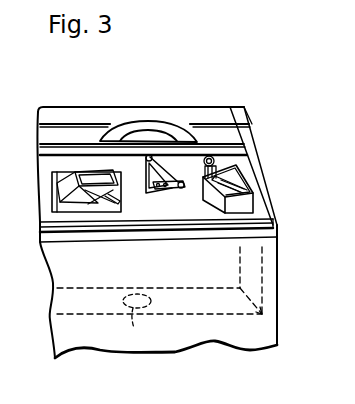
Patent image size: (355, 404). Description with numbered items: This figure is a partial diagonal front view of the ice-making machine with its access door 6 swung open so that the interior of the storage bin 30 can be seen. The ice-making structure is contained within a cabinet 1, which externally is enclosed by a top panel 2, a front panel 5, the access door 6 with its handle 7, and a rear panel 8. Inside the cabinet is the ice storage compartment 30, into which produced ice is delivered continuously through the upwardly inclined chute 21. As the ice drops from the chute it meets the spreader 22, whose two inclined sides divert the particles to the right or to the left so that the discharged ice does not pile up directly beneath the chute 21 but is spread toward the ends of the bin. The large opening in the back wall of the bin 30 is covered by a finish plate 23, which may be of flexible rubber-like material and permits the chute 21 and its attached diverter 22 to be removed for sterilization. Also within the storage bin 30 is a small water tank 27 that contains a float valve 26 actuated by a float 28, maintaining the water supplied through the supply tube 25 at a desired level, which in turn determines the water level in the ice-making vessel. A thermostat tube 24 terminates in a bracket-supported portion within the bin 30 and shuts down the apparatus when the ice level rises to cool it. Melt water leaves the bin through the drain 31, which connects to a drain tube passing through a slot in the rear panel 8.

The cabinet 1 is at (177, 103).
The top panel 2 is at (213, 111).
The front panel 5 is at (230, 337).
The access door 6 is at (43, 137).
The handle 7 is at (133, 121).
The rear panel 8 is at (133, 284).
The chute 21 is at (68, 185).
The spreader 22 is at (95, 194).
The finish plate 23 is at (60, 210).
The thermostat tube 24 is at (178, 187).
The supply tube 25 is at (215, 163).
The float valve 26 is at (220, 172).
The water tank 27 is at (238, 183).
The float 28 is at (240, 192).
The ice storage compartment 30 is at (204, 214).
The drain 31 is at (141, 320).